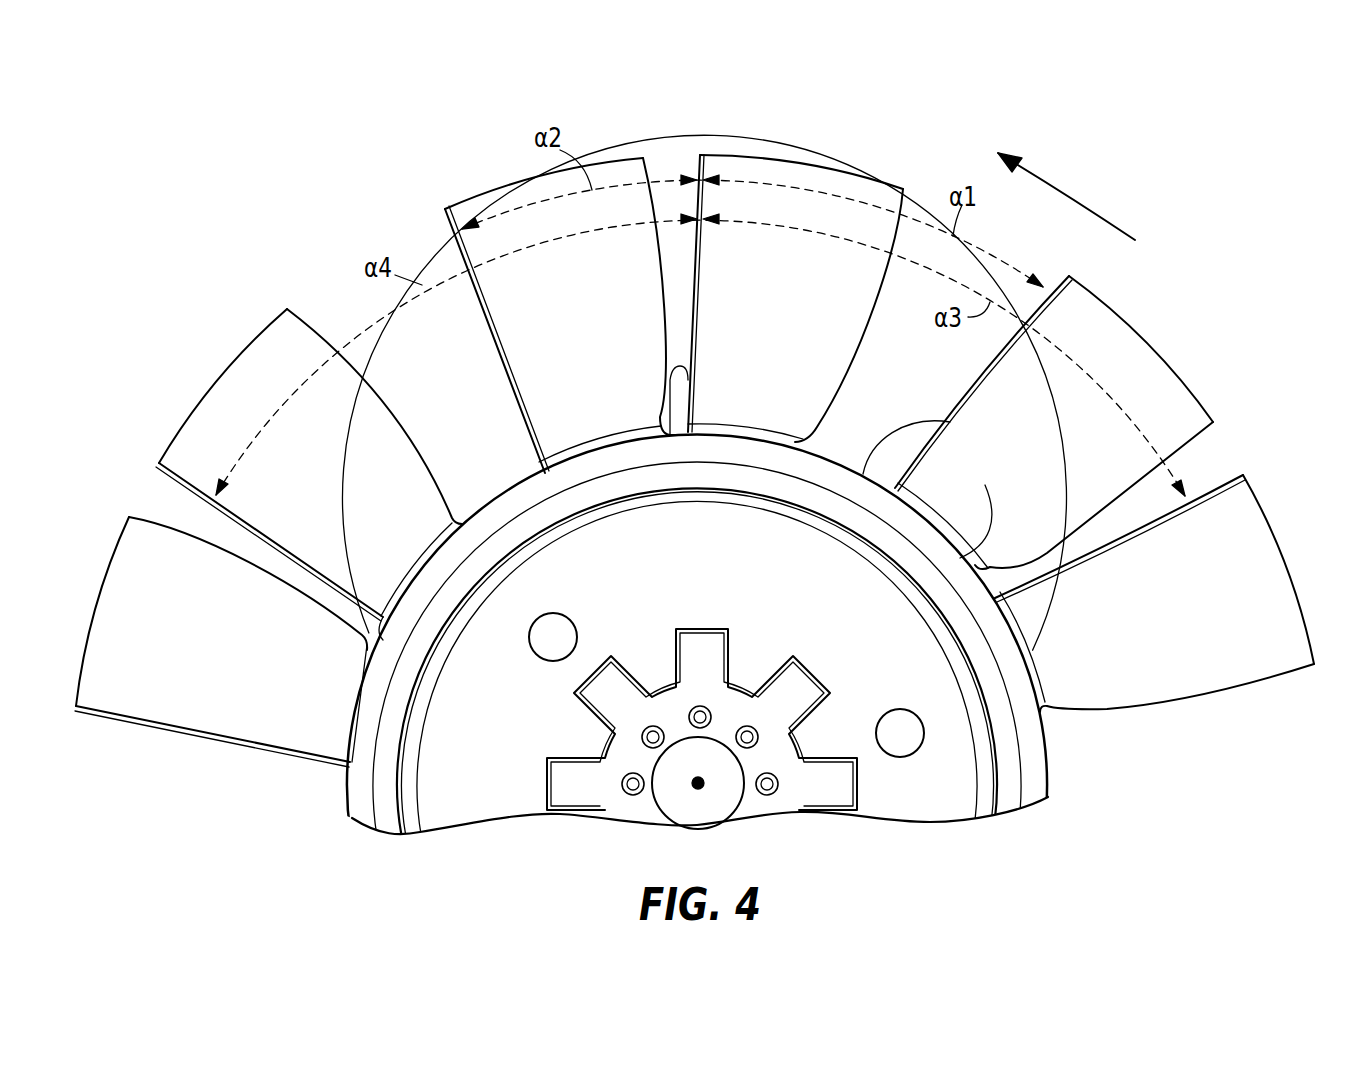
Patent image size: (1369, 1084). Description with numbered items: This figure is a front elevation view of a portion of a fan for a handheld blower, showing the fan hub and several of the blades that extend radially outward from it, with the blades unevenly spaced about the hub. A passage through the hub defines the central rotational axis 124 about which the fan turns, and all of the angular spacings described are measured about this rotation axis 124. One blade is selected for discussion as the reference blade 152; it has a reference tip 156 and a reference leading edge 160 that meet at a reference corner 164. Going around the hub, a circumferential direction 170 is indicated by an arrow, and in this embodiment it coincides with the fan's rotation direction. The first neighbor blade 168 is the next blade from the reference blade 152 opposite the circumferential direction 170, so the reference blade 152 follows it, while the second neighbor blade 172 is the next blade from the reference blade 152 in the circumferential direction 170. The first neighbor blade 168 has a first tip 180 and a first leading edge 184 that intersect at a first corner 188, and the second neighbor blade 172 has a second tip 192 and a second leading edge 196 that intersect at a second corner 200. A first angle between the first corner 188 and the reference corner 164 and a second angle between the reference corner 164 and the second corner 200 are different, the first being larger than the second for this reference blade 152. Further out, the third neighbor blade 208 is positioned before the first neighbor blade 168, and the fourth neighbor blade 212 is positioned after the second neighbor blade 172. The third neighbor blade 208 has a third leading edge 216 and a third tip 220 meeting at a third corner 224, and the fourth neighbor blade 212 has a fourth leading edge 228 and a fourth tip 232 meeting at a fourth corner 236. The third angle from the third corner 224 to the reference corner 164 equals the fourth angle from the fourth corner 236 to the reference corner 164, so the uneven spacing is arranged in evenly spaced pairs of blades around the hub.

The central rotational axis 124 is at (697, 790).
The reference blade 152 is at (752, 373).
The reference tip 156 is at (800, 162).
The reference leading edge 160 is at (663, 403).
The reference corner 164 is at (700, 237).
The first neighbor blade 168 is at (985, 540).
The circumferential direction 170 is at (1078, 197).
The second neighbor blade 172 is at (577, 388).
The first tip 180 is at (1144, 336).
The first leading edge 184 is at (865, 472).
The first corner 188 is at (1067, 275).
The second tip 192 is at (527, 179).
The second leading edge 196 is at (513, 390).
The second corner 200 is at (447, 210).
The third neighbor blade 208 is at (1247, 657).
The fourth neighbor blade 212 is at (348, 457).
The third leading edge 216 is at (1063, 565).
The third tip 220 is at (1288, 562).
The third corner 224 is at (1216, 480).
The fourth leading edge 228 is at (220, 512).
The fourth tip 232 is at (226, 365).
The fourth corner 236 is at (162, 474).